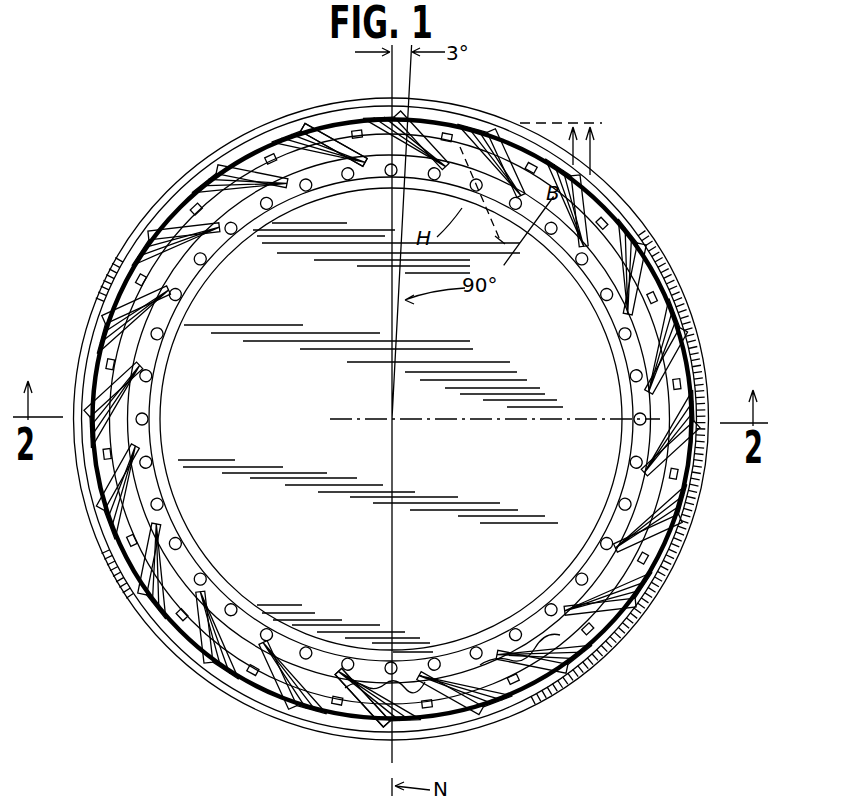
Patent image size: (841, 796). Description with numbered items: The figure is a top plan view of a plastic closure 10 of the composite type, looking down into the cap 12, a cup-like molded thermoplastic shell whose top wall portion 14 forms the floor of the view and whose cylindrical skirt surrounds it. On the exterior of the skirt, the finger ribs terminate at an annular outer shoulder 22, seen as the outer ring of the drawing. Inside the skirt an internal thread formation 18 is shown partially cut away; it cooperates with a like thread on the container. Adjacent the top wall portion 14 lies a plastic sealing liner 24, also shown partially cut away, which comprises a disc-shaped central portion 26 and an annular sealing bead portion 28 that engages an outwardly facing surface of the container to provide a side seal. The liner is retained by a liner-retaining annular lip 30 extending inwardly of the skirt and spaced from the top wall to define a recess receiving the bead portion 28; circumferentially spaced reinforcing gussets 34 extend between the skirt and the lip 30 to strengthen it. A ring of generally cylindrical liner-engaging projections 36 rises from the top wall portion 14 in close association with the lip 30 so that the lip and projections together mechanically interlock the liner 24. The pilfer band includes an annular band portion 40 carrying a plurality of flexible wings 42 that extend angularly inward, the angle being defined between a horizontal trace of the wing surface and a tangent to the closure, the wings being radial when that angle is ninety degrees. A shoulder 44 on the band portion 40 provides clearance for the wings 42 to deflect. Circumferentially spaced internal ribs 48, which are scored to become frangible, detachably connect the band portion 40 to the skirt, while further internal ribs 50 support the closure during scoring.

The plastic closure 10 is at (665, 106).
The closure cap 12 is at (731, 366).
The top wall portion 14 is at (157, 357).
The internal thread formation 18 is at (363, 683).
The annular outer shoulder 22 is at (562, 693).
The plastic sealing liner 24 is at (604, 497).
The disc-shaped central portion 26 is at (357, 463).
The annular sealing bead portion 28 is at (222, 590).
The liner-retaining annular lip 30 is at (633, 363).
The reinforcing gussets 34 is at (530, 647).
The liner-engaging projections 36 is at (160, 330).
The annular band portion 40 is at (106, 542).
The wings 42 is at (422, 130).
The shoulder 44 is at (95, 432).
The internal ribs 48 is at (293, 157).
The internal ribs 50 is at (372, 158).